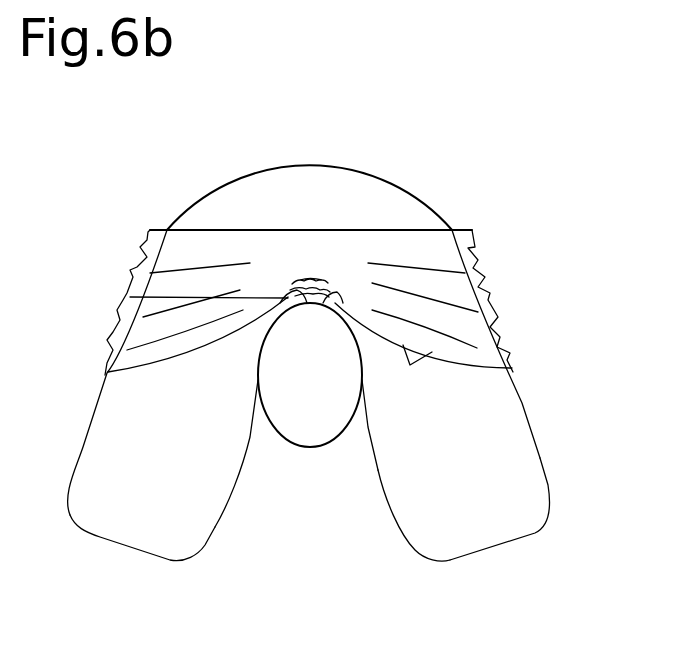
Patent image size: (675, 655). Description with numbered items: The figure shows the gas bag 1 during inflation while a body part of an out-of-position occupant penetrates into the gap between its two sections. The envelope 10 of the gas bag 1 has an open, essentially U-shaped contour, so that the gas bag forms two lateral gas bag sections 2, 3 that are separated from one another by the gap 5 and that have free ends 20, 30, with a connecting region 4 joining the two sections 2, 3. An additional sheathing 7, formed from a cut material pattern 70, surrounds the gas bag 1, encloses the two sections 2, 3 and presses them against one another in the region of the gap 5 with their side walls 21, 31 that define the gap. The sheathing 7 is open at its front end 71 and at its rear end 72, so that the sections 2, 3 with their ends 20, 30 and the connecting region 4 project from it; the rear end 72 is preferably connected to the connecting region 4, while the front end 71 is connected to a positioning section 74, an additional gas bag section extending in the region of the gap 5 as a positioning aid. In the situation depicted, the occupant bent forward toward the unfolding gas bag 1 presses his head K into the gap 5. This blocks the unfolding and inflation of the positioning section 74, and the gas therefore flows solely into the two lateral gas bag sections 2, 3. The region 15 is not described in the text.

The gas bag 1 is at (308, 132).
The gas bag section 2 is at (127, 437).
The gas bag section 3 is at (493, 434).
The connecting region 4 is at (373, 200).
The gap 5 is at (372, 473).
The sheathing 7 is at (484, 241).
The envelope 10 is at (230, 185).
The roughened bonding spot 15 is at (330, 283).
The free end 20 is at (107, 520).
The side wall 21 is at (250, 418).
The free end 30 is at (495, 520).
The side wall 31 is at (368, 427).
The cut material pattern 70 is at (137, 277).
The front end 71 is at (420, 363).
The rear end 72 is at (375, 230).
The positioning section 74 is at (130, 297).
The head K is at (307, 420).